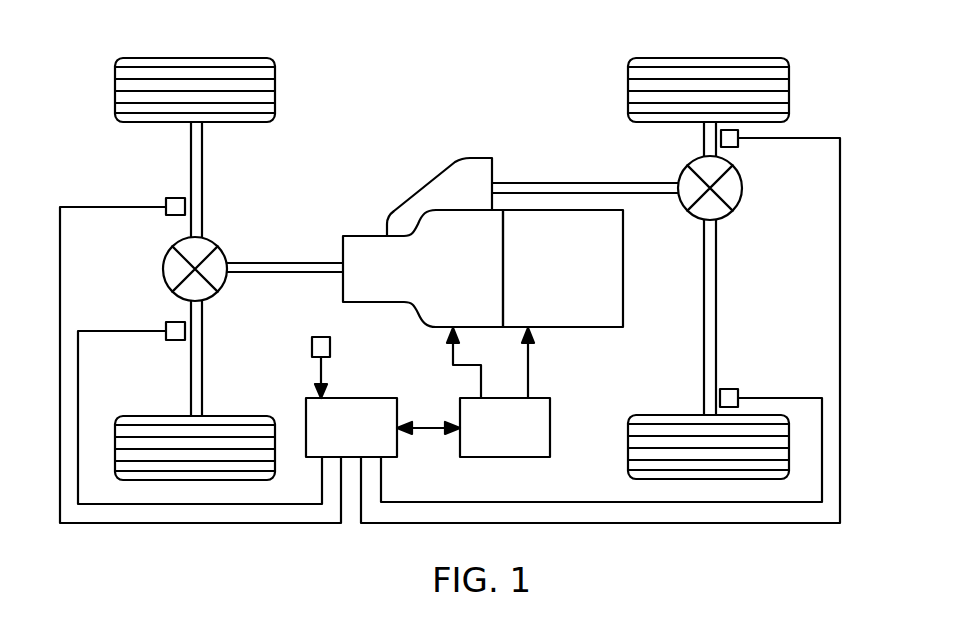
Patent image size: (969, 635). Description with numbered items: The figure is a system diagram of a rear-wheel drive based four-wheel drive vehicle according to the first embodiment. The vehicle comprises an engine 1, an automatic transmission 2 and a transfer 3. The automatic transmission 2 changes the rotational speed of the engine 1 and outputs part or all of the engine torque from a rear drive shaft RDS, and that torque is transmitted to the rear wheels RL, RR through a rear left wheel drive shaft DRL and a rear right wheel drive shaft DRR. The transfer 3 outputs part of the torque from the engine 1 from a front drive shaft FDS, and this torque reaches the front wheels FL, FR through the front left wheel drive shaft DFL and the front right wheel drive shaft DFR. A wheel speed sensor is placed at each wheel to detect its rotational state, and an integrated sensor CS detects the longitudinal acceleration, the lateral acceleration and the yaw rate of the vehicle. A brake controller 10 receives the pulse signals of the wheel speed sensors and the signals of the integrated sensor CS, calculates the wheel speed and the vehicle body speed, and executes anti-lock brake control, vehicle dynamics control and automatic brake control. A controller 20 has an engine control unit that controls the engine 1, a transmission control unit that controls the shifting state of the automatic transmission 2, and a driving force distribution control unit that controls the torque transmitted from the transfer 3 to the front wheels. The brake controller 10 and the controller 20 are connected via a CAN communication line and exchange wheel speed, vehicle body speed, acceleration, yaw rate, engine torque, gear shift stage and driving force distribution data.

The engine 1 is at (623, 272).
The automatic transmission 2 is at (362, 245).
The transfer 3 is at (442, 167).
The brake controller 10 is at (370, 397).
The controller 20 is at (497, 457).
The rear left wheel RL is at (165, 57).
The rear right wheel RR is at (213, 416).
The front left wheel FL is at (657, 57).
The front right wheel FR is at (688, 415).
The rear left wheel drive shaft DRL is at (202, 186).
The rear right wheel drive shaft DRR is at (202, 366).
The front left wheel drive shaft DFL is at (701, 138).
The front right wheel drive shaft DFR is at (717, 313).
The rear drive shaft RDS is at (275, 262).
The front drive shaft FDS is at (563, 182).
The integrated sensor CS is at (318, 337).